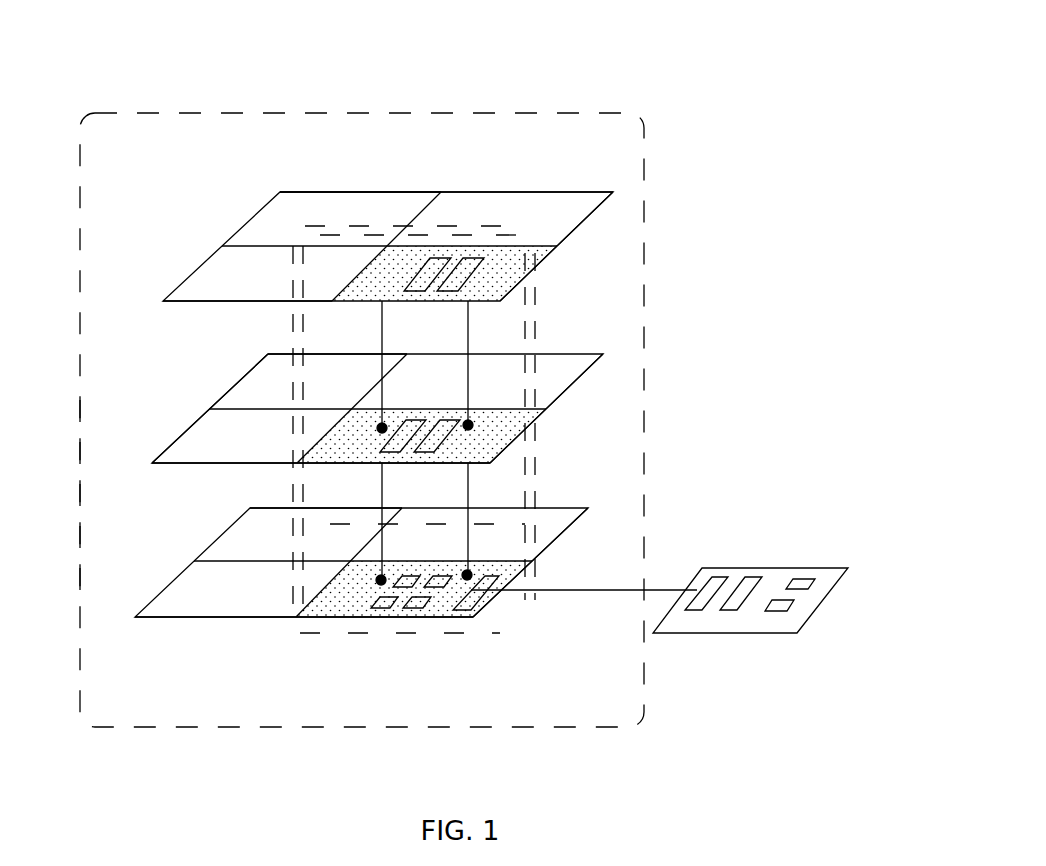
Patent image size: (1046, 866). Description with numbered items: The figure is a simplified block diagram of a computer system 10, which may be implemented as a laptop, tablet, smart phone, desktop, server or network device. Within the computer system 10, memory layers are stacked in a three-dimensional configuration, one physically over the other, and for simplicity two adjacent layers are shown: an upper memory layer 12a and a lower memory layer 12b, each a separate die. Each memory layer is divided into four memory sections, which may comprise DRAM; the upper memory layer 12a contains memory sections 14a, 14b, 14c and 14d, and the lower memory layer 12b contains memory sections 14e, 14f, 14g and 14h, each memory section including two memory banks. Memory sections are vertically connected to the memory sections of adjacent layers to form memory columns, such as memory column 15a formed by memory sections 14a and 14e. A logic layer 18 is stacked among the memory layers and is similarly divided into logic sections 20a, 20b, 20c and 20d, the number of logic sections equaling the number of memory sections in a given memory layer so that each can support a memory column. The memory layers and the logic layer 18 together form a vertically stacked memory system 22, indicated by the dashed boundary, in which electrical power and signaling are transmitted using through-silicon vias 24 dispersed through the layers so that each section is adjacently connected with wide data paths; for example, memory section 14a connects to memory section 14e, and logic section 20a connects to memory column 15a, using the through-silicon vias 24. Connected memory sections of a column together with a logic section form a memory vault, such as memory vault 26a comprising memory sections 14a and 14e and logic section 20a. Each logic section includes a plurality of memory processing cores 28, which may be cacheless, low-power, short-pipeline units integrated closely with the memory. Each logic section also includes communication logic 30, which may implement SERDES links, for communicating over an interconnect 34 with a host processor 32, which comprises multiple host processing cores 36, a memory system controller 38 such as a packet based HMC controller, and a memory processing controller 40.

The computer system 10 is at (742, 60).
The upper memory layer 12a is at (608, 257).
The lower memory layer 12b is at (606, 410).
The memory section 14a is at (545, 250).
The memory section 14b is at (538, 205).
The memory section 14c is at (368, 200).
The memory section 14d is at (218, 288).
The memory section 14e is at (500, 438).
The memory section 14f is at (558, 362).
The memory section 14g is at (334, 373).
The memory section 14h is at (178, 452).
The memory column 15a is at (293, 473).
The logic layer 18 is at (104, 580).
The logic section 20a is at (334, 612).
The logic section 20b is at (548, 503).
The logic section 20c is at (309, 528).
The logic section 20d is at (212, 607).
The vertically stacked memory system 22 is at (580, 112).
The through-silicon vias 24 is at (383, 352).
The memory vault 26a is at (530, 623).
The memory processing cores 28 is at (412, 580).
The communication logic 30 is at (485, 605).
The host processor 32 is at (712, 570).
The interconnect 34 is at (547, 590).
The host processing cores 36 is at (793, 602).
The memory system controller 38 is at (695, 610).
The memory processing controller 40 is at (732, 610).